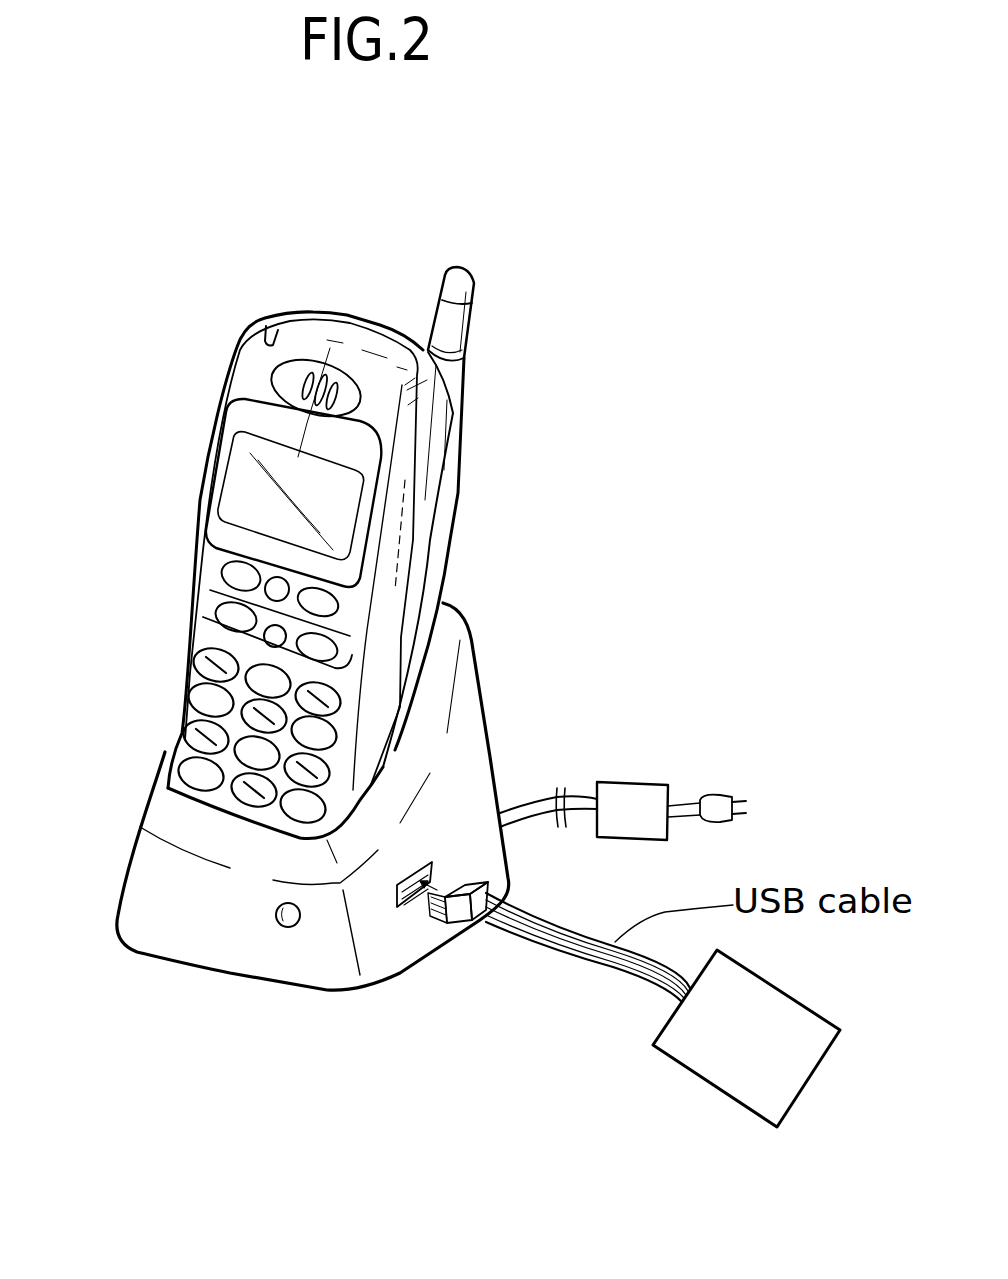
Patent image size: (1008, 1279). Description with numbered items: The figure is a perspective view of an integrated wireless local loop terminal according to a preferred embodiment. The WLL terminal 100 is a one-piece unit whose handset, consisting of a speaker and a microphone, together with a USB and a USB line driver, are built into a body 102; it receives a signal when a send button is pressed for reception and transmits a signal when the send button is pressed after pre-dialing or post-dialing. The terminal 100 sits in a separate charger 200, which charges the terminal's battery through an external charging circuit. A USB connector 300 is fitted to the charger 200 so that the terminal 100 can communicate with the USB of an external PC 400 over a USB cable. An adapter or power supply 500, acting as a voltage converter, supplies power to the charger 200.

The WLL terminal 100 is at (413, 553).
The body 102 is at (440, 465).
The charger 200 is at (163, 917).
The USB connector 300 is at (407, 897).
The PC 400 is at (713, 1087).
The adapter or power supply 500 is at (632, 796).